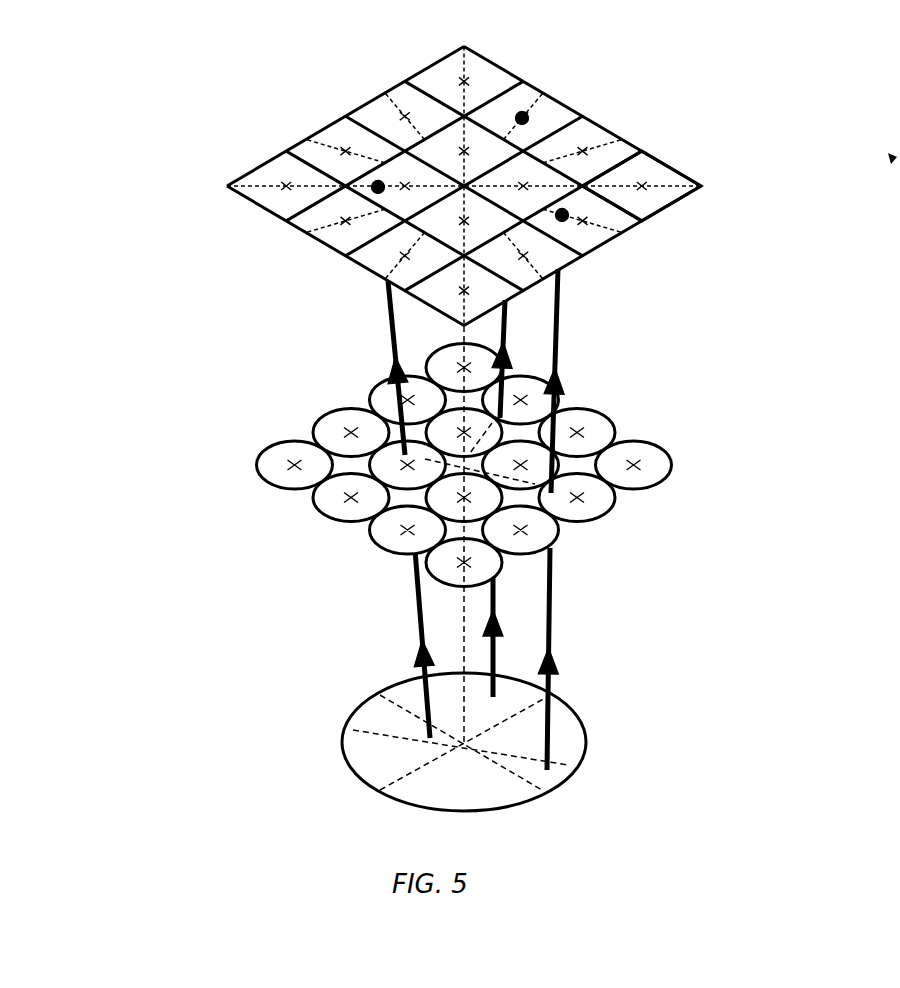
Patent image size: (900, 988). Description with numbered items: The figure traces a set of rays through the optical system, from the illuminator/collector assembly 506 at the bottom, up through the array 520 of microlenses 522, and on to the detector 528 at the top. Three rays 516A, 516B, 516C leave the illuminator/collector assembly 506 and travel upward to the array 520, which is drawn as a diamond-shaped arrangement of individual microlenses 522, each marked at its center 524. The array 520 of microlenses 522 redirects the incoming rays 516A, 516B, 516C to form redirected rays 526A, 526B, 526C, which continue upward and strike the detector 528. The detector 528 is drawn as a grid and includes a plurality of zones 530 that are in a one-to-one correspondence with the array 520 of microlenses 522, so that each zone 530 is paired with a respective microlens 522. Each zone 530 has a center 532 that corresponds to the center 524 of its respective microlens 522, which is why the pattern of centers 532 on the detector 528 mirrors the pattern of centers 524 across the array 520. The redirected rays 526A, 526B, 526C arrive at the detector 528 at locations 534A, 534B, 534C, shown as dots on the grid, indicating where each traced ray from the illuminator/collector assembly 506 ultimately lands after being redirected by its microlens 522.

The illuminator/collector assembly 506 is at (586, 741).
The ray 516A is at (418, 627).
The ray 516B is at (498, 612).
The ray 516C is at (552, 646).
The array of microlenses 520 is at (448, 465).
The microlens 522 is at (676, 442).
The center of microlens 524 is at (632, 464).
The ray 526A is at (560, 357).
The ray 526B is at (506, 330).
The ray 526C is at (387, 320).
The detector 528 is at (426, 182).
The zone 530 is at (645, 203).
The center of zone 532 is at (648, 186).
The location 534A is at (562, 214).
The location 534B is at (522, 118).
The location 534C is at (378, 187).